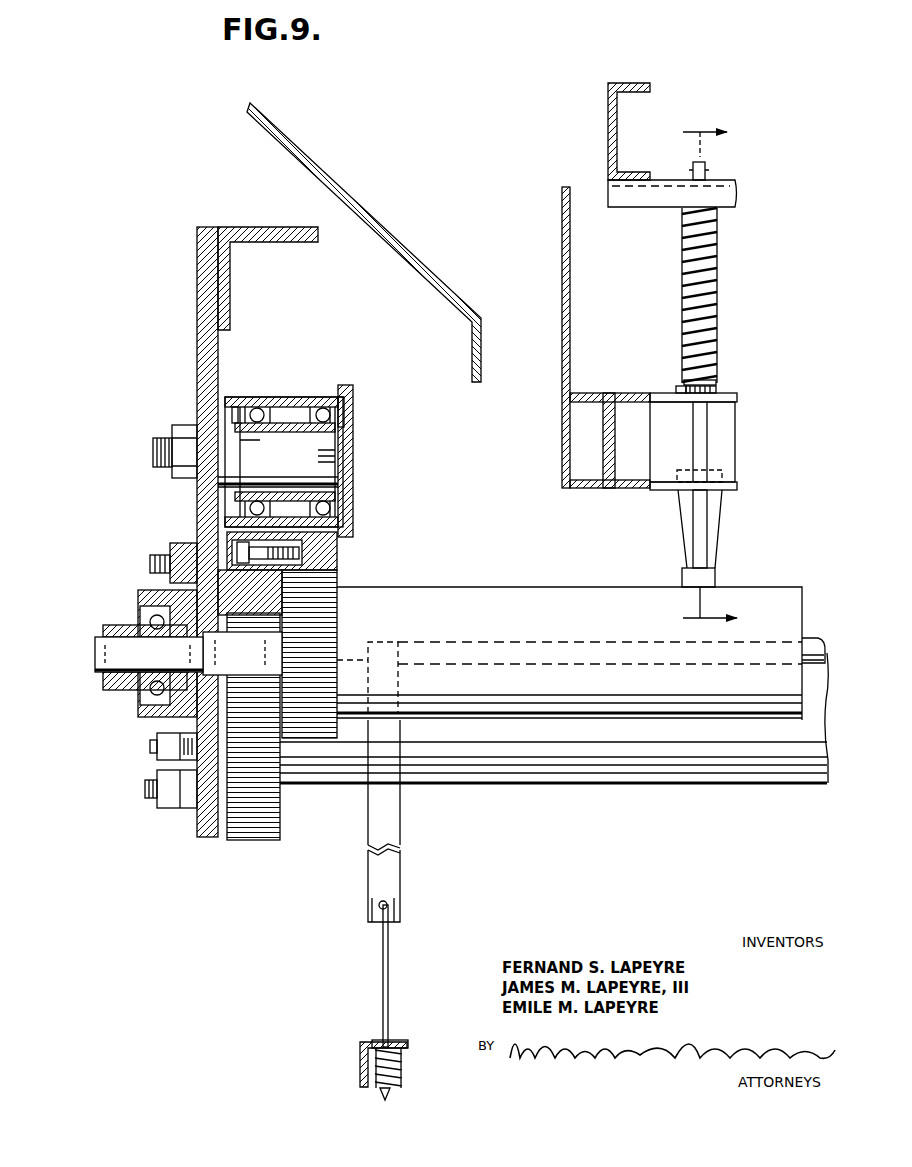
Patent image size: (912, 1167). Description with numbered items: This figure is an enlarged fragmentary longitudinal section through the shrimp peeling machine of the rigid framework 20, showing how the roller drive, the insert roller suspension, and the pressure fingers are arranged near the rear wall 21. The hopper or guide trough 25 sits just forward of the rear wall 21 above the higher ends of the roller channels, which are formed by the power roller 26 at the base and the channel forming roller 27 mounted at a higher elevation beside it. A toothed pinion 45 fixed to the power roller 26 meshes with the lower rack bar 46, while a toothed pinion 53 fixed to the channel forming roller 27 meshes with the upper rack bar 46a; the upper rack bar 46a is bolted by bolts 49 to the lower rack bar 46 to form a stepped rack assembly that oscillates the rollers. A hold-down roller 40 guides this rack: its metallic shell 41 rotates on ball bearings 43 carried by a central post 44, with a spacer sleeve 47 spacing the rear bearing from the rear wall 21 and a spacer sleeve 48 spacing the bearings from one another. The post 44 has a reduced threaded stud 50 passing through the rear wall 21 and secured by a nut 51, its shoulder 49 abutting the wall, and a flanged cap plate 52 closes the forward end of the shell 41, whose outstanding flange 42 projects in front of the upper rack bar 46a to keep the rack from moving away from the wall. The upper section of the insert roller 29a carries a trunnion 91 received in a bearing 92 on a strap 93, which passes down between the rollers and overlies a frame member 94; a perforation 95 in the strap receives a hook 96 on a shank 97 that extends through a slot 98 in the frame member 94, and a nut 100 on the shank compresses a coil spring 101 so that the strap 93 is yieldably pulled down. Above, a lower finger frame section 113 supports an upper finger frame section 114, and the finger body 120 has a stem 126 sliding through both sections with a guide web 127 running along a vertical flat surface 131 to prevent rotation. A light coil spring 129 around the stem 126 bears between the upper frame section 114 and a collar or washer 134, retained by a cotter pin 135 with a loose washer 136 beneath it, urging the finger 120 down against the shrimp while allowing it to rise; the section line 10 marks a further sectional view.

The rigid framework 20 is at (275, 235).
The rear wall 21 is at (200, 346).
The hopper or guide trough 25 is at (508, 252).
The power roller 26 is at (625, 785).
The channel forming roller 27 is at (516, 590).
The upper section of insert roller 29a is at (815, 640).
The hold-down roller 40 is at (335, 561).
The metallic shell 41 is at (300, 397).
The outstanding flange 42 is at (345, 385).
The ball bearings 43 is at (258, 412).
The central post 44 is at (300, 455).
The toothed pinion 45 is at (262, 815).
The lower rack bar 46 is at (242, 585).
The upper rack bar 46a is at (340, 548).
The spacer sleeve 47 is at (236, 432).
The spacer sleeve 48 is at (272, 432).
The shoulder 49 is at (225, 480).
The reduced threaded stud 50 is at (155, 452).
The nut 51 is at (180, 428).
The flanged cap plate 52 is at (355, 490).
The toothed pinion 53 is at (330, 630).
The trunnion 91 is at (370, 642).
The bearing 92 is at (435, 640).
The strap or bearing support 93 is at (395, 820).
The frame member 94 is at (360, 1065).
The perforation 95 is at (387, 905).
The hook 96 is at (372, 918).
The shank 97 is at (388, 990).
The slot 98 is at (400, 1042).
The nut 100 is at (392, 1090).
The coil spring 101 is at (402, 1066).
The lower finger frame section 113 is at (605, 490).
The upper finger frame section 114 is at (608, 127).
The finger body 120 is at (722, 570).
The stem 126 is at (705, 163).
The guide web 127 is at (718, 520).
The light coil spring 129 is at (715, 240).
The vertical flat surface 131 is at (730, 445).
The collar or washer 134 is at (718, 385).
The cotter pin 135 is at (680, 388).
The loose washer 136 is at (725, 388).
The section line indicator 10 is at (692, 375).